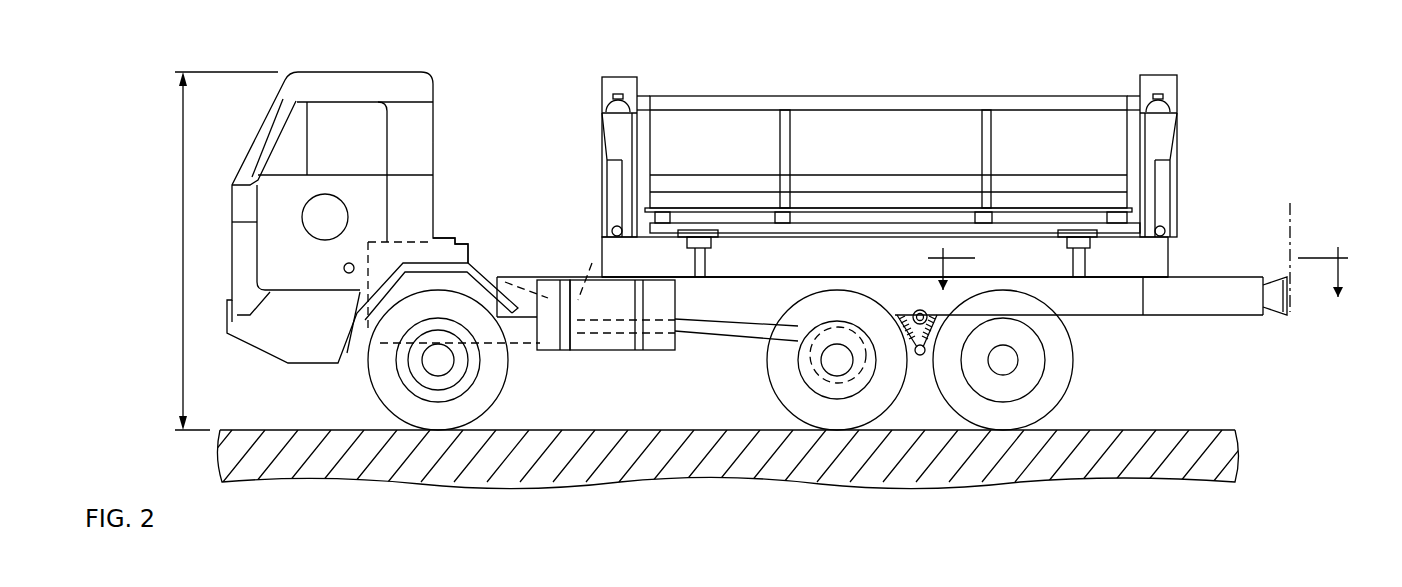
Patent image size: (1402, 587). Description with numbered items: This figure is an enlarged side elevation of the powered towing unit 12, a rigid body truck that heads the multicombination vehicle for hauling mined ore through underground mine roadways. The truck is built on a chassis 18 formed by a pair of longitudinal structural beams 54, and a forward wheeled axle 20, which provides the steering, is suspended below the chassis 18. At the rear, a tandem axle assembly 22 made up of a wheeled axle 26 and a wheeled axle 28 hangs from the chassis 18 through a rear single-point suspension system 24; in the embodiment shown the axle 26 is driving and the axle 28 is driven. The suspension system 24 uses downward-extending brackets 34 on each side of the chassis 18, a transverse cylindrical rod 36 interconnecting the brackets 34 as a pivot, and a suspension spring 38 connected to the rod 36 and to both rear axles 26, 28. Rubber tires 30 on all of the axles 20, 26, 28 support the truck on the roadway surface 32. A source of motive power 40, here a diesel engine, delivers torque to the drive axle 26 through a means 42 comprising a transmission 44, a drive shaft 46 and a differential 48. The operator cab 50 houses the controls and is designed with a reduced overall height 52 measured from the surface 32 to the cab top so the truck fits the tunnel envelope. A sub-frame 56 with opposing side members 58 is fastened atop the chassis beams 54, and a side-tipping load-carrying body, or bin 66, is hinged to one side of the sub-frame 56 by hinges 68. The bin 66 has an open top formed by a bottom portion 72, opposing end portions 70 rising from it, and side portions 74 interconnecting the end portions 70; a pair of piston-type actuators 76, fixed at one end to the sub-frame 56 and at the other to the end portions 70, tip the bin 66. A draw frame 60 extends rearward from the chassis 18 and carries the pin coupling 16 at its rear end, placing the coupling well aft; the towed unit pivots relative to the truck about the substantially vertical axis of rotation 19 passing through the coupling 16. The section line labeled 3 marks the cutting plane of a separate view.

The powered towing unit 12 is at (890, 146).
The pin coupling 16 is at (1305, 313).
The chassis 18 is at (1135, 323).
The vertical axis of rotation 19 is at (1290, 218).
The forward wheeled axle 20 is at (432, 362).
The rear tandem axle assembly 22 is at (1100, 385).
The rear single-point suspension system 24 is at (922, 368).
The wheeled axle 26 is at (830, 367).
The wheeled axle 28 is at (1010, 360).
The rubber tires 30 is at (493, 390).
The surface 32 is at (598, 430).
The brackets 34 is at (866, 330).
The transverse rod 36 is at (915, 312).
The suspension spring 38 is at (945, 318).
The source of motive power 40 is at (455, 232).
The means for transmitting torque 42 is at (528, 283).
The transmission 44 is at (592, 263).
The drive shaft 46 is at (716, 335).
The differential 48 is at (795, 310).
The operator cab 50 is at (350, 72).
The overall height 52 is at (180, 212).
The structural beams 54 is at (1120, 300).
The sub-frame 56 is at (1182, 237).
The side members 58 is at (1145, 256).
The draw frame 60 is at (1243, 318).
The load-carrying body 66 is at (1015, 100).
The hinges 68 is at (683, 243).
The end portions 70 is at (650, 125).
The bottom portion 72 is at (820, 232).
The side portions 74 is at (830, 130).
The actuators 76 is at (602, 165).
The section line 3- 3 is at (1137, 270).